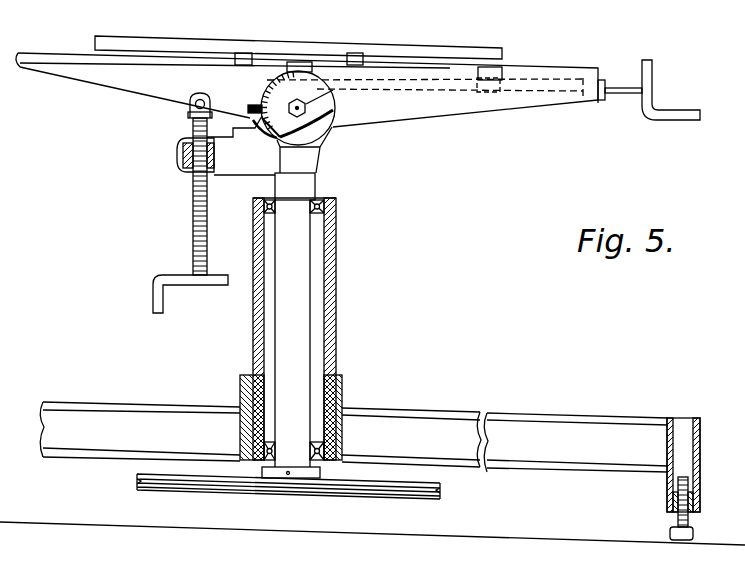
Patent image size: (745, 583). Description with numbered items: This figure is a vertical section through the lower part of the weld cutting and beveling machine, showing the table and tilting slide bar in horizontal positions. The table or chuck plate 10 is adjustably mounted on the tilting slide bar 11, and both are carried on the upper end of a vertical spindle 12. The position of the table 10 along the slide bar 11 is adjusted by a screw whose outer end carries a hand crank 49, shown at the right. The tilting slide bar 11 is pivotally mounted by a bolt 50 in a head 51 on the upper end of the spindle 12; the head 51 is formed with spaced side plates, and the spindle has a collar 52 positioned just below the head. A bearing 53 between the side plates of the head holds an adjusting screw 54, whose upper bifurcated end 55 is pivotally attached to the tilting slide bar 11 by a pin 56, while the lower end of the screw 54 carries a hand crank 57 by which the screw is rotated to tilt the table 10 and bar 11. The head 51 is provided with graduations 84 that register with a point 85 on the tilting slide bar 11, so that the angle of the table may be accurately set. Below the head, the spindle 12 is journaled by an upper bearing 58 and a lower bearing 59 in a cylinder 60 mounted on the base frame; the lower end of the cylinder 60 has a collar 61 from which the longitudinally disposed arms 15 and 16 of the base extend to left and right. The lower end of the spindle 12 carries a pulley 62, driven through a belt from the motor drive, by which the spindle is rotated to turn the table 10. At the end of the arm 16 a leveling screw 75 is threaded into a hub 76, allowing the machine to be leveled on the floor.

The table or chuck plate 10 is at (422, 52).
The tilting slide bar 11 is at (440, 110).
The spindle 12 is at (302, 248).
The longitudinally disposed arm 15 is at (88, 398).
The longitudinally disposed arm 16 is at (570, 410).
The hand crank 49 is at (652, 93).
The bolt 50 is at (309, 103).
The head 51 is at (319, 151).
The collar 52 is at (315, 186).
The bearing 53 is at (183, 153).
The adjusting screw 54 is at (193, 223).
The upper bifurcated end 55 is at (194, 96).
The pin 56 is at (191, 107).
The hand crank 57 is at (153, 300).
The bearing 58 is at (330, 218).
The bearing 59 is at (341, 445).
The cylinder 60 is at (330, 311).
The collar 61 is at (341, 386).
The pulley 62 is at (406, 500).
The leveling screw 75 is at (694, 531).
The hub 76 is at (701, 459).
The graduations 84 is at (268, 80).
The point 85 is at (250, 107).